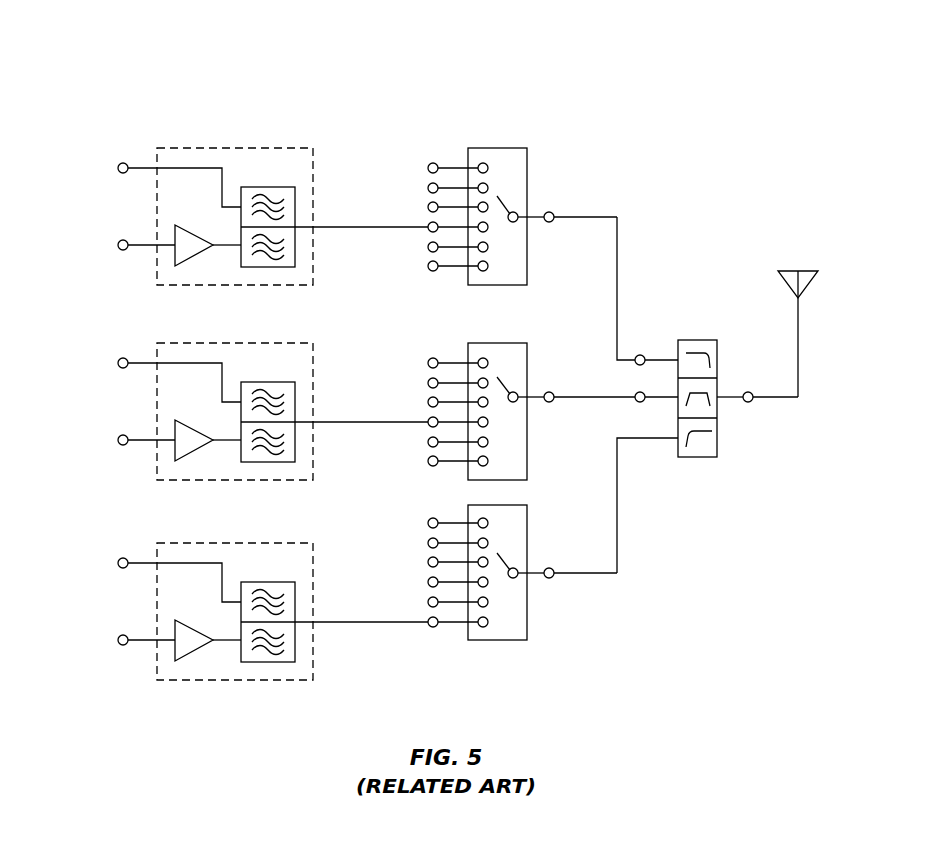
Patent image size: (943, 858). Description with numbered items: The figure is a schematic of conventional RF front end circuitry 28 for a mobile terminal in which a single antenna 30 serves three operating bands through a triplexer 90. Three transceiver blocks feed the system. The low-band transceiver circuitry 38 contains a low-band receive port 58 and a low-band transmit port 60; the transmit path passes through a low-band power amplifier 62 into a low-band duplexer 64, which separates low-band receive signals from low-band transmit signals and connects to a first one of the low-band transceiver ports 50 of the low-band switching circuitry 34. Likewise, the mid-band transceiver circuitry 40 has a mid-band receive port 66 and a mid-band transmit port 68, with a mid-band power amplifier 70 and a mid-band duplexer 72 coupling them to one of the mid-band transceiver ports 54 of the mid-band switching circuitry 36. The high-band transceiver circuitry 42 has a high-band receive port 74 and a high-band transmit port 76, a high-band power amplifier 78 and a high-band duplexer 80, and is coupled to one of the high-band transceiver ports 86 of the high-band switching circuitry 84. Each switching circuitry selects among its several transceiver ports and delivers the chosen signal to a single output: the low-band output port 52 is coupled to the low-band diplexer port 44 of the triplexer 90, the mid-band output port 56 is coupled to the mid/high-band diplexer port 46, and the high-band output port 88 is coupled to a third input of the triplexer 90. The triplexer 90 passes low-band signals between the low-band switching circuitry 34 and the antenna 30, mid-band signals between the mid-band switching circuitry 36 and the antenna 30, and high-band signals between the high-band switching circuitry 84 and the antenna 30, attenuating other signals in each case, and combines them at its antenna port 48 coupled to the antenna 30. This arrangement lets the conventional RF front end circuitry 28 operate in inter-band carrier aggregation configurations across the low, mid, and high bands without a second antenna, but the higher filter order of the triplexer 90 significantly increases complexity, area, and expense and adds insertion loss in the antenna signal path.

The conventional RF front end circuitry 28 is at (666, 60).
The antenna 30 is at (807, 270).
The low-band switching circuitry 34 is at (455, 205).
The mid-band switching circuitry 36 is at (455, 401).
The low-band transceiver circuitry 38 is at (257, 148).
The mid-band transceiver circuitry 40 is at (257, 343).
The high-band transceiver circuitry 42 is at (257, 543).
The low-band diplexer port 44 is at (640, 355).
The mid/high-band diplexer port 46 is at (640, 402).
The antenna port 48 is at (748, 392).
The low-band transceiver ports 50 is at (418, 153).
The low-band output port 52 is at (549, 212).
The mid-band transceiver ports 54 is at (418, 487).
The mid-band output port 56 is at (549, 392).
The low-band receive port 58 is at (118, 168).
The low-band transmit port 60 is at (118, 245).
The low-band power amplifier 62 is at (193, 233).
The low-band duplexer 64 is at (253, 187).
The mid-band receive port 66 is at (118, 363).
The mid-band transmit port 68 is at (118, 440).
The mid-band power amplifier 70 is at (193, 428).
The mid-band duplexer 72 is at (253, 382).
The high-band receive port 74 is at (118, 563).
The high-band transmit port 76 is at (118, 640).
The high-band power amplifier 78 is at (193, 628).
The high-band duplexer 80 is at (253, 582).
The high-band switching circuitry 84 is at (457, 587).
The high-band transceiver ports 86 is at (418, 642).
The high-band output port 88 is at (549, 568).
The triplexer 90 is at (697, 457).